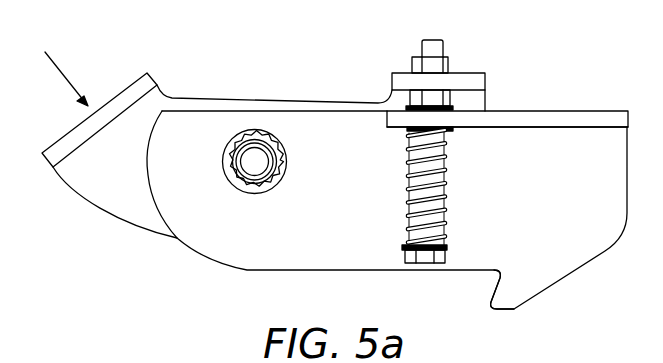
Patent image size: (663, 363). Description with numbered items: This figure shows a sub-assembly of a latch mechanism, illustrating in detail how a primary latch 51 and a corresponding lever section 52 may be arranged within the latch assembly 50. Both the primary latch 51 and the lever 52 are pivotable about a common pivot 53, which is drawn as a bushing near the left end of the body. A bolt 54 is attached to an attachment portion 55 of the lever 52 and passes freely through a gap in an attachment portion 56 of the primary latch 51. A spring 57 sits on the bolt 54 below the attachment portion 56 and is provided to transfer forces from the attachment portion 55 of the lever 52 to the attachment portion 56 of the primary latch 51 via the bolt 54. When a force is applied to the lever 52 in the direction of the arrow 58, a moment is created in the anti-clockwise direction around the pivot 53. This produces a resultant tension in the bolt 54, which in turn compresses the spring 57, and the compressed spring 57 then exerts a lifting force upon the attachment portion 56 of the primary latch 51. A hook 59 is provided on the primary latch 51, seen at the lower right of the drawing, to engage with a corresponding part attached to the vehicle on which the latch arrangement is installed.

The cutting arm body 50 is at (276, 84).
The primary latch 51 is at (562, 111).
The lever section 52 is at (60, 137).
The pivot 53 is at (268, 192).
The bolt 54 is at (438, 37).
The attachment portion of lever 55 is at (485, 77).
The attachment portion of primary latch 56 is at (522, 128).
The spring 57 is at (410, 207).
The arrow 58 is at (65, 73).
The hook 59 is at (485, 307).